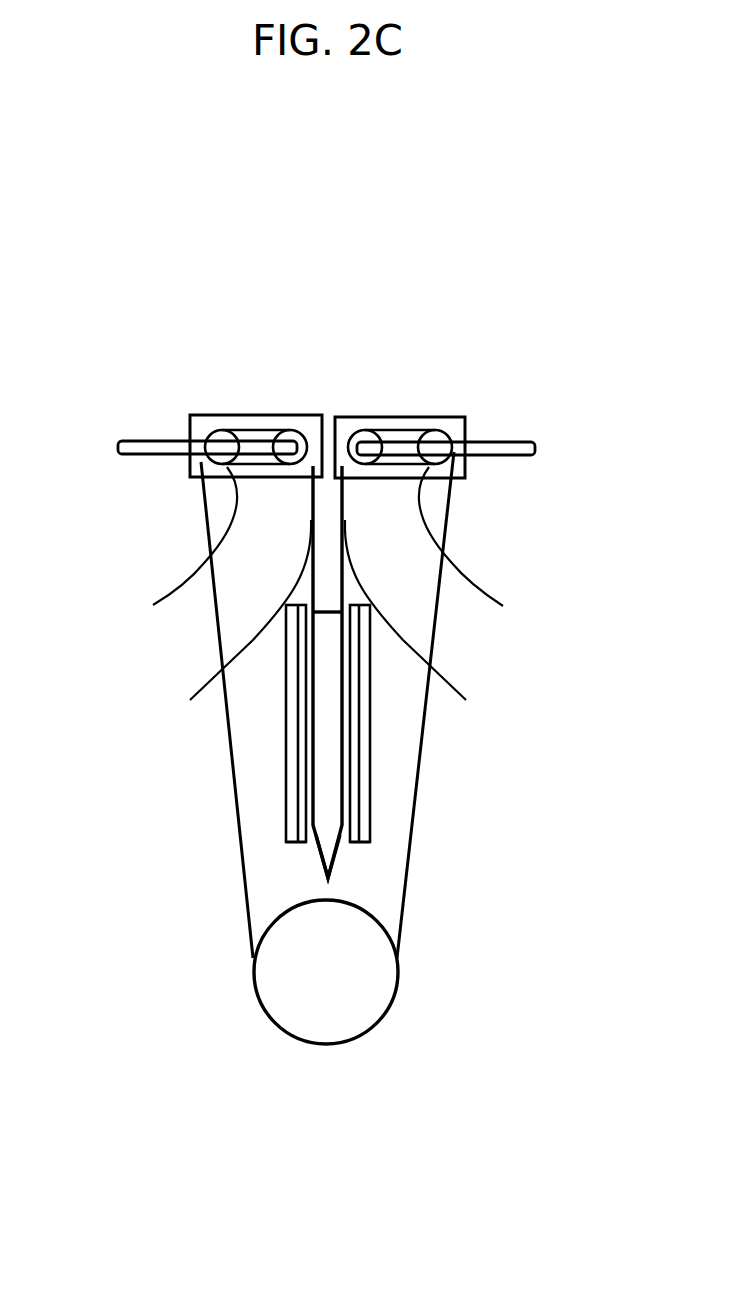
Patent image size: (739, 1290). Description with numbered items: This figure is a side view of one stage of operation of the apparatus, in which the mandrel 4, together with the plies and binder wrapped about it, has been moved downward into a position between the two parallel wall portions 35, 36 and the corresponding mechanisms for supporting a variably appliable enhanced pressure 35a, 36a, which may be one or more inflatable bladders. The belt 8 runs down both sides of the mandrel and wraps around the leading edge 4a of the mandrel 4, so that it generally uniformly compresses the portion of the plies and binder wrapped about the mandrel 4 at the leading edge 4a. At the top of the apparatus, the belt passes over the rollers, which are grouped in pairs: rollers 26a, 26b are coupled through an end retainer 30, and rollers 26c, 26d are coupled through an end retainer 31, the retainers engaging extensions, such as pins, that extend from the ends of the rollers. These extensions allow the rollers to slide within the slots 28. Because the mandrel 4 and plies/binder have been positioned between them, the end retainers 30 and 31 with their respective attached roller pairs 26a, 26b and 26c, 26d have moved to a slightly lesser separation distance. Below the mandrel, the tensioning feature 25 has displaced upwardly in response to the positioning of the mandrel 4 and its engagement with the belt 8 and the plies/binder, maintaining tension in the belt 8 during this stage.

The mandrel 4 is at (325, 712).
The leading edge of the mandrel 4a is at (327, 865).
The belt 8 is at (400, 925).
The tensioning feature 25 is at (358, 983).
The roller 26a is at (489, 551).
The roller 26b is at (432, 628).
The roller 26c is at (222, 629).
The roller 26d is at (161, 551).
The slot 28 is at (132, 452).
The end retainer 30 is at (455, 413).
The end retainer 31 is at (227, 417).
The parallel wall portion 35 is at (362, 772).
The mechanism for supporting a variably appliable enhanced pressure 35a is at (367, 847).
The parallel wall portion 36 is at (290, 758).
The mechanism for supporting a variably appliable enhanced pressure 36a is at (298, 843).